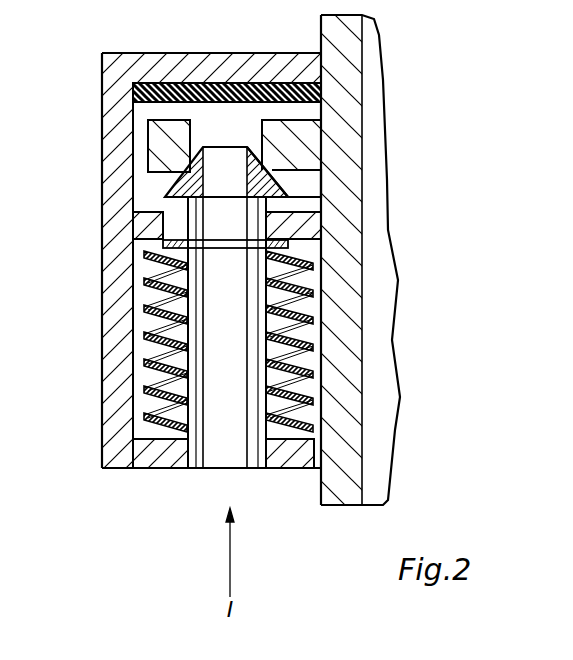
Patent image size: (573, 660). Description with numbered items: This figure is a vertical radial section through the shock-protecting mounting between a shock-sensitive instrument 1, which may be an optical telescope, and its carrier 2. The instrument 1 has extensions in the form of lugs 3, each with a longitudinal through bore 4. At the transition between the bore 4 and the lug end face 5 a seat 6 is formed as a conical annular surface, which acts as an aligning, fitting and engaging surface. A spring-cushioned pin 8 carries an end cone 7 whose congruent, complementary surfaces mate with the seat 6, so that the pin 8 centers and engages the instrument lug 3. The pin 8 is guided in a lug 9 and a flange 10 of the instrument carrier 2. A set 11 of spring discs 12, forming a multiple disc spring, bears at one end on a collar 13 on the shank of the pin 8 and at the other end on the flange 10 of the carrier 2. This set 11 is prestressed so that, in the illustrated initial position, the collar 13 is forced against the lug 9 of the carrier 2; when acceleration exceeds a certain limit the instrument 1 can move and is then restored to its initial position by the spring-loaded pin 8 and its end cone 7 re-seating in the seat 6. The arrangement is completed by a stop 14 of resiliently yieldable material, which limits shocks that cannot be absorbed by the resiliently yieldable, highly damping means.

The instrument 1 is at (364, 320).
The carrier 2 is at (106, 306).
The lug 3 is at (285, 128).
The through bore 4 is at (222, 130).
The lug end face 5 is at (163, 184).
The seat 6 is at (265, 165).
The end cone 7 is at (290, 196).
The spring-cushioned pin 8 is at (302, 384).
The lug 9 is at (160, 222).
The flange 10 is at (148, 455).
The set of spring discs 11 is at (146, 383).
The spring disc 12 is at (145, 330).
The collar 13 is at (288, 246).
The stop 14 is at (133, 93).